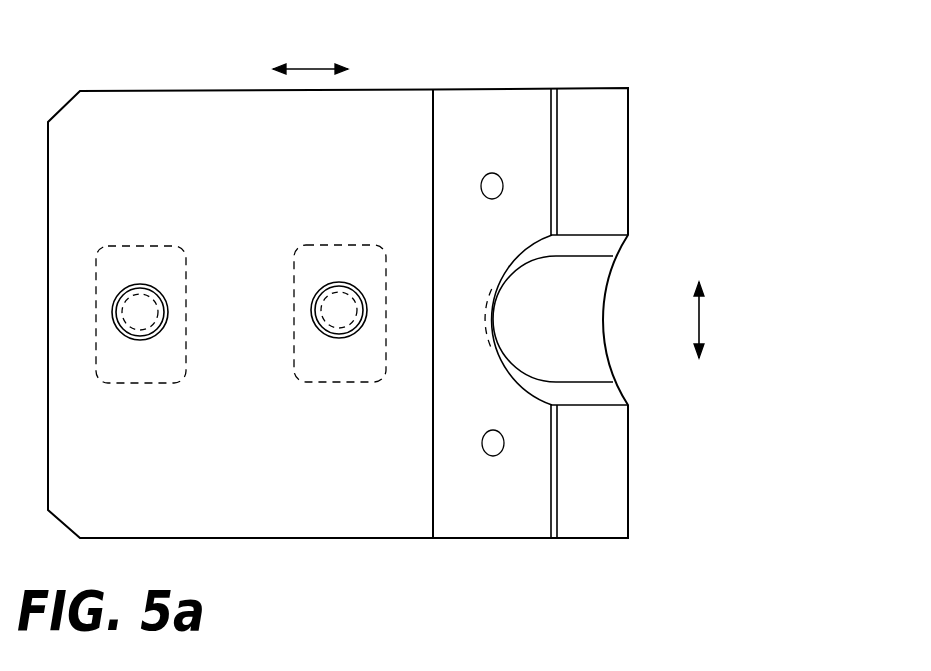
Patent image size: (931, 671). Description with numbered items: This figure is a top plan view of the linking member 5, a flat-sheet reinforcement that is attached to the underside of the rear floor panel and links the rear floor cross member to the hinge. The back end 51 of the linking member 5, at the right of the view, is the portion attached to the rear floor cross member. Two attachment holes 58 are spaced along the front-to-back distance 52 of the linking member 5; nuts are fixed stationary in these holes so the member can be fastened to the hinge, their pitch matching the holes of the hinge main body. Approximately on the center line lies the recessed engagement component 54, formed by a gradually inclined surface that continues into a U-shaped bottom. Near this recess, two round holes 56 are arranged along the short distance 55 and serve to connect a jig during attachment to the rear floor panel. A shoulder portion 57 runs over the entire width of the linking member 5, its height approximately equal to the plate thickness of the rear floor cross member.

The linking member 5 is at (470, 538).
The back end 51 is at (590, 88).
The front-to-back distance 52 is at (307, 69).
The recessed engagement component 54 is at (587, 320).
The short distance 55 is at (699, 318).
The round holes 56 is at (501, 177).
The shoulder portion 57 is at (548, 538).
The attachment holes 58 is at (140, 340).